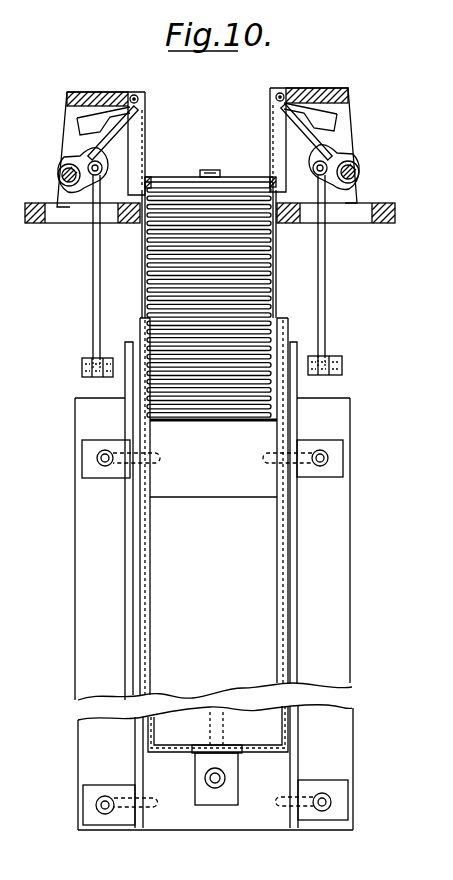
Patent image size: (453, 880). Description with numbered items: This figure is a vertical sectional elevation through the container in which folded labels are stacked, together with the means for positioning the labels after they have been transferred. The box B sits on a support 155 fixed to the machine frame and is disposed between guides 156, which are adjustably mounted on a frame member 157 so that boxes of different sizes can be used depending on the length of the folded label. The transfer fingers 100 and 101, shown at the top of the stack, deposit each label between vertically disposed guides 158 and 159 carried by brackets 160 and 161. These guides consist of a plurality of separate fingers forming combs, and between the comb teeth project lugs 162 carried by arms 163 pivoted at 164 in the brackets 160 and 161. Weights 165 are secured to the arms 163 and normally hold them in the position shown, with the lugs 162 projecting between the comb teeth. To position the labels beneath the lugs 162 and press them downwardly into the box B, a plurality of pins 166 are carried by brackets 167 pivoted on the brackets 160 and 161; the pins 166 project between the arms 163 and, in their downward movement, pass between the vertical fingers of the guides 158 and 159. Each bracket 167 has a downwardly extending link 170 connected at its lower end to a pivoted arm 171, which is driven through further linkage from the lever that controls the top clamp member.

The transfer finger 100 is at (231, 180).
The transfer finger 101 is at (204, 172).
The support 155 is at (194, 762).
The guides 156 is at (135, 648).
The frame member 157 is at (188, 818).
The vertically disposed guide 158 is at (143, 255).
The vertically disposed guide 159 is at (277, 249).
The bracket 160 is at (70, 130).
The bracket 161 is at (345, 135).
The lugs 162 is at (168, 176).
The arms 163 is at (133, 112).
The pivot 164 is at (134, 94).
The weights 165 is at (78, 120).
The presser pins 166 is at (135, 128).
The brackets 167 is at (70, 157).
The link 170 is at (93, 292).
The arm 171 is at (82, 363).
The box B is at (290, 578).